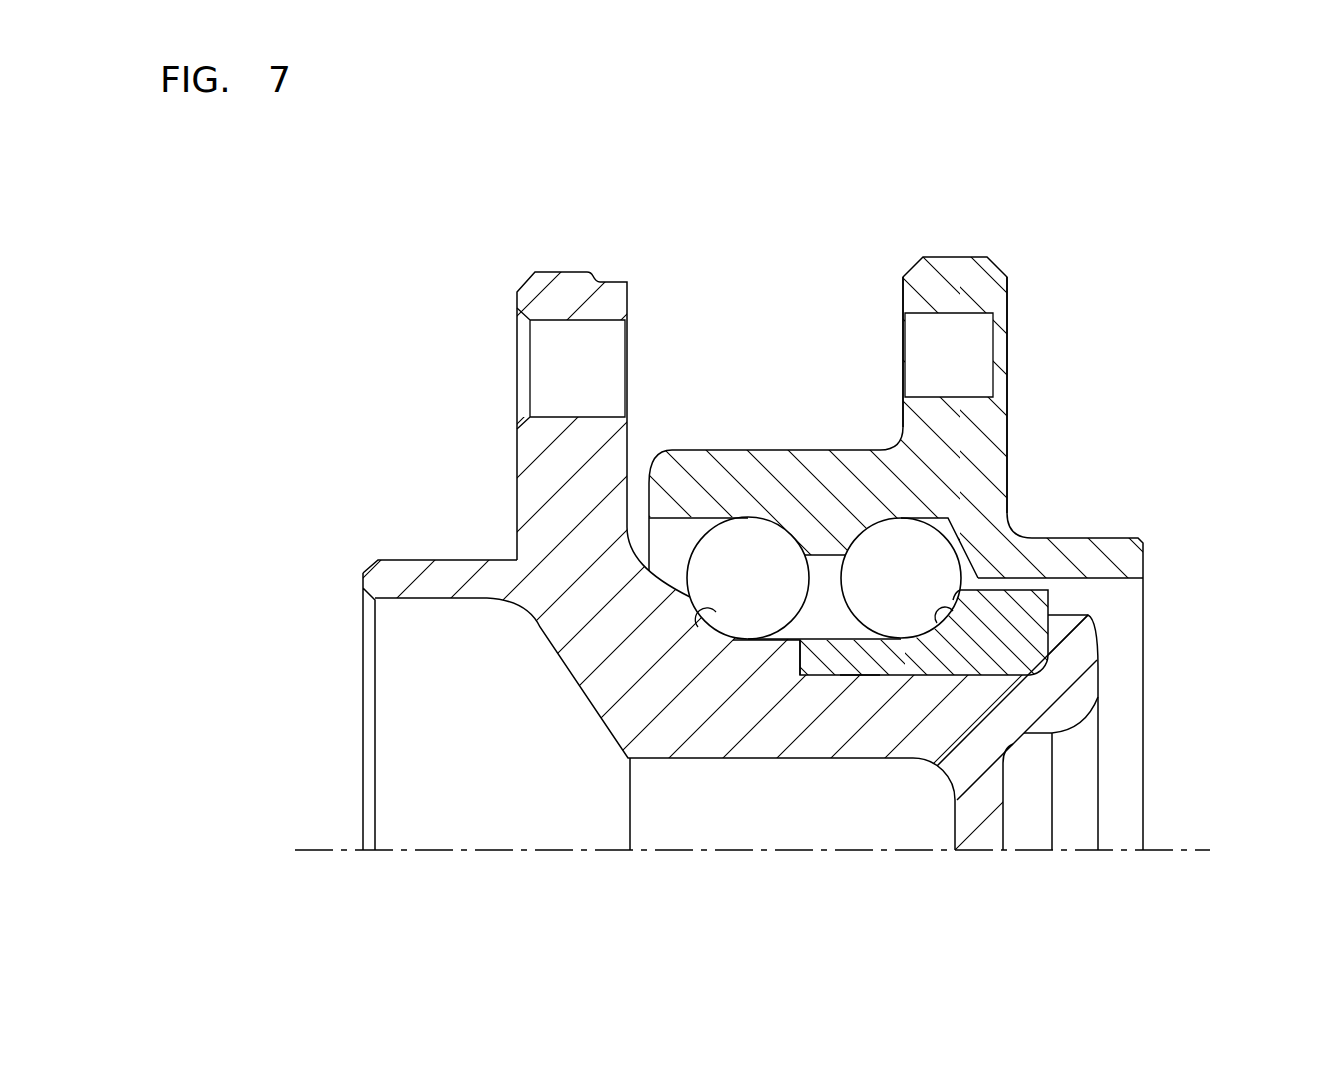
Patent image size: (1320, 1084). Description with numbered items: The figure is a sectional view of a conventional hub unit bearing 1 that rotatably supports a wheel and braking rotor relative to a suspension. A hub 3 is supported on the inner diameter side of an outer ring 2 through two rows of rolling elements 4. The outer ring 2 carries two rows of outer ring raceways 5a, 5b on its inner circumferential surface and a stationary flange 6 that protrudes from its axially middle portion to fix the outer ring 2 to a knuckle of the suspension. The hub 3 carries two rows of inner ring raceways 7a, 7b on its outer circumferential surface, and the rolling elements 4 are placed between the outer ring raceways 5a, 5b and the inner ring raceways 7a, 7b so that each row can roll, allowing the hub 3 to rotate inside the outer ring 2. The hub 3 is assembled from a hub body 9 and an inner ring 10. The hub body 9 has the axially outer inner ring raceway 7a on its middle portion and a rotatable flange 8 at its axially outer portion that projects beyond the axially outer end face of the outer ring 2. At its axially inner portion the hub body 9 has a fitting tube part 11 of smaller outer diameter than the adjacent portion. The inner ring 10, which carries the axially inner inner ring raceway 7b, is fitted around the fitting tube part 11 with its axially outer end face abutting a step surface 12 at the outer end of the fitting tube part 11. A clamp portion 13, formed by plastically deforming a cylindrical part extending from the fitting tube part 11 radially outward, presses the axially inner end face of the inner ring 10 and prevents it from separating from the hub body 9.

The hub unit bearing 1 is at (462, 243).
The outer ring 2 is at (987, 442).
The hub 3 is at (338, 722).
The rolling elements 4 is at (734, 553).
The outer ring raceway 5a is at (752, 545).
The outer ring raceway 5b is at (881, 540).
The stationary flange 6 is at (969, 272).
The inner ring raceway 7a is at (703, 617).
The inner ring raceway 7b is at (962, 605).
The rotatable flange 8 is at (575, 296).
The hub body 9 is at (414, 576).
The inner ring 10 is at (917, 655).
The fitting tube part 11 is at (853, 668).
The step surface 12 is at (800, 645).
The clamp portion 13 is at (1073, 642).